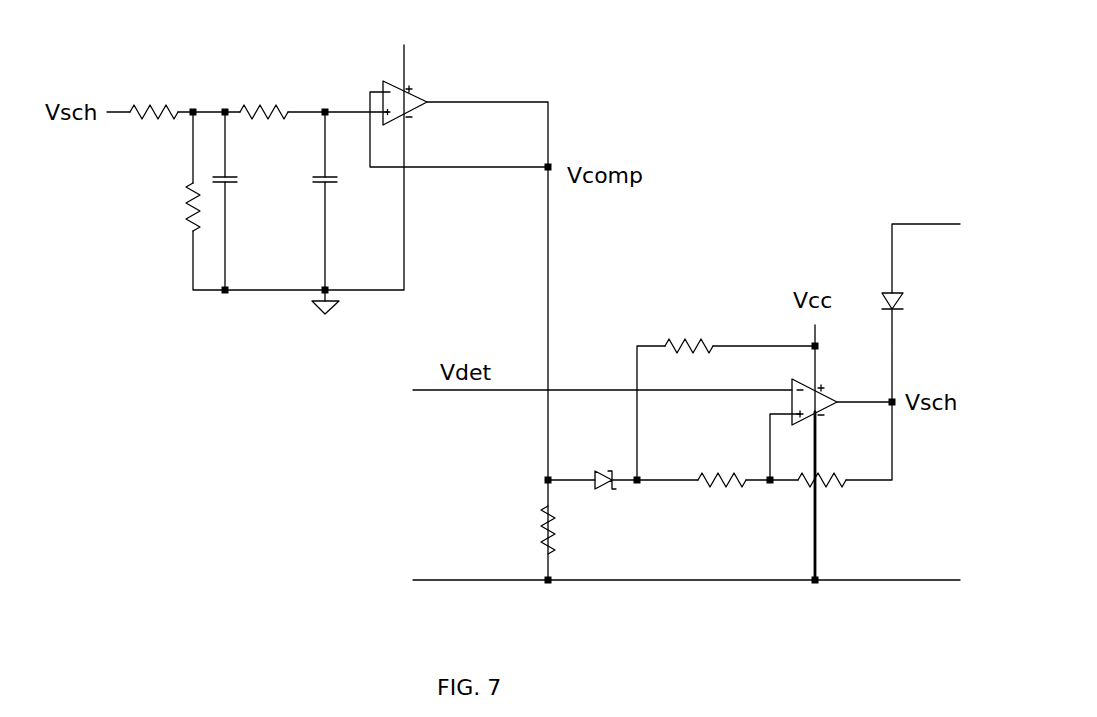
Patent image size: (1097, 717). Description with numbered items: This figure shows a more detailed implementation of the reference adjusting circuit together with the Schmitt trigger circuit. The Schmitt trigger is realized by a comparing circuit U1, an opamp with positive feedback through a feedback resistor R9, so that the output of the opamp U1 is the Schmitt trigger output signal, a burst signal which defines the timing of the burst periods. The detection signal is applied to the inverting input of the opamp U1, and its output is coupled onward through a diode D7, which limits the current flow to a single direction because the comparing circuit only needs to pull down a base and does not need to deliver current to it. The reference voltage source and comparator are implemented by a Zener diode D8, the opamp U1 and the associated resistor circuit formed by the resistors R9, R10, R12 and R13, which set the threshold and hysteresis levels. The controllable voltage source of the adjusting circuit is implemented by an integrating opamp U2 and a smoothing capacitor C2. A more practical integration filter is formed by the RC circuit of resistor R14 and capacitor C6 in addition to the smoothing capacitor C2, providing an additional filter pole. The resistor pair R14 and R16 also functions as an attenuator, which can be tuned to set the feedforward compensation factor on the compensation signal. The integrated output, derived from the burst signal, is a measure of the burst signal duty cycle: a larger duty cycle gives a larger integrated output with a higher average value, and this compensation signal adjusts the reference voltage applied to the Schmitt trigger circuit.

The resistor R14 is at (151, 97).
The resistor R16 is at (162, 207).
The capacitor C6 is at (236, 197).
The smoothing capacitor C2 is at (339, 196).
The integrating opamp U2 is at (414, 117).
The resistor R10 is at (694, 325).
The comparing circuit (opamp) U1 is at (824, 415).
The diode D7 is at (912, 309).
The Zener diode D8 is at (599, 461).
The resistor R13 is at (718, 498).
The feedback resistor R9 is at (830, 498).
The resistor R12 is at (575, 530).